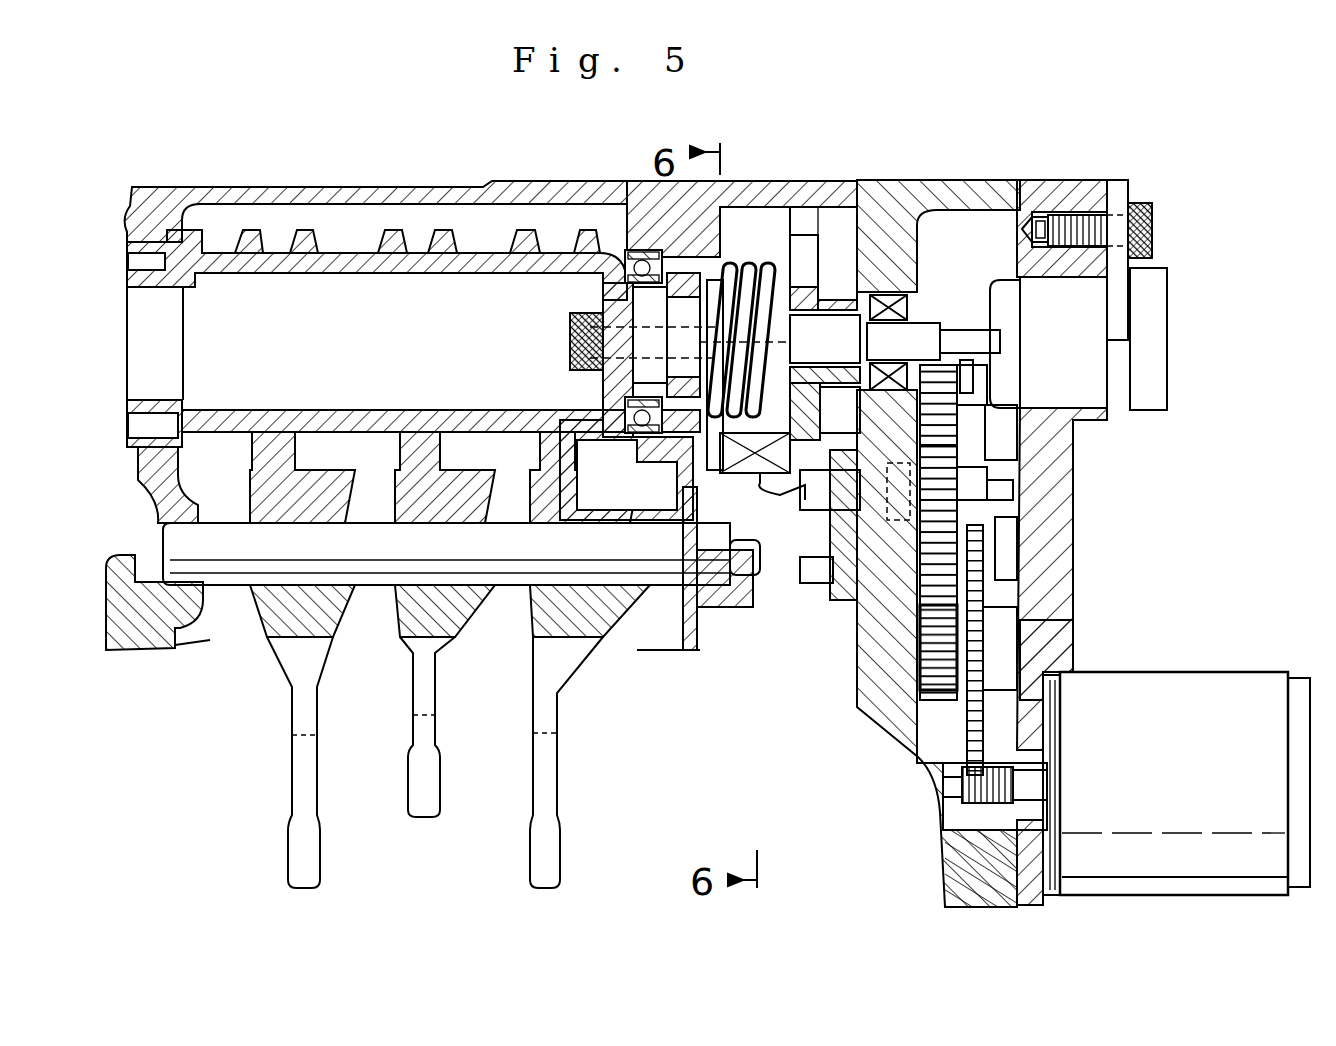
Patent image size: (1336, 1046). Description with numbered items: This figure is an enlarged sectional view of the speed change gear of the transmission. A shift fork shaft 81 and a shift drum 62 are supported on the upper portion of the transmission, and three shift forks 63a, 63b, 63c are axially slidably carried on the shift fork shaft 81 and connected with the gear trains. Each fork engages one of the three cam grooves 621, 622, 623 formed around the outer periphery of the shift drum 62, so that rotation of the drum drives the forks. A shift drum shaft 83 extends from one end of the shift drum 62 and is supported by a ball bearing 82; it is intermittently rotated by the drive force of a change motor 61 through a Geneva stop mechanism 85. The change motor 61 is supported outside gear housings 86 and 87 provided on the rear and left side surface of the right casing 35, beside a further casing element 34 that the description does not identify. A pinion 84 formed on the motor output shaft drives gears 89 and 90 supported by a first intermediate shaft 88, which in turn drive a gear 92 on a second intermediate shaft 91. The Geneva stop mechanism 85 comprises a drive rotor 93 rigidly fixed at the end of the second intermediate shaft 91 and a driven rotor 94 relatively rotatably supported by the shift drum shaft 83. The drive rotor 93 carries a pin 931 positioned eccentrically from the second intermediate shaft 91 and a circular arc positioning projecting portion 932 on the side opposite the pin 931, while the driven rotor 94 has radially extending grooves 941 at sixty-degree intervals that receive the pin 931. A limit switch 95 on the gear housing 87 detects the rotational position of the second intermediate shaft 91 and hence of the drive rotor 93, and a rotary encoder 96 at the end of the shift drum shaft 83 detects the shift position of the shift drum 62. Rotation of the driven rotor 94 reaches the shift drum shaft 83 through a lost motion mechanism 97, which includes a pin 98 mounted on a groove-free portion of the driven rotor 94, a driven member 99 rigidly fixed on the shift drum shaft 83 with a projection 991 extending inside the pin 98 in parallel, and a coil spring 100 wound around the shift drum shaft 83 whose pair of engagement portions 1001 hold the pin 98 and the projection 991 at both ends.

The cover 34 is at (260, 186).
The shift drum 62 is at (377, 238).
The cam groove 621 is at (290, 255).
The cam groove 622 is at (440, 260).
The cam groove 623 is at (548, 281).
The ball bearing 82 is at (612, 306).
The right casing 35 is at (778, 184).
The driven rotor 94 is at (838, 225).
The groove 941 is at (808, 228).
The gear housing 86 is at (953, 192).
The gear housing 87 is at (1049, 188).
The rotary encoder 96 is at (1078, 348).
The driven member 99 is at (725, 265).
The projection 991 is at (775, 362).
The coil spring 100 is at (748, 300).
The engagement portion 1001 is at (765, 430).
The Geneva stop mechanism 85 is at (880, 295).
The shift drum shaft 83 is at (910, 322).
The pin 98 is at (825, 491).
The drive rotor 93 is at (888, 532).
The pin 931 is at (845, 595).
The positioning projecting portion 932 is at (945, 430).
The gear 92 is at (940, 460).
The second intermediate shaft 91 is at (1025, 458).
The limit switch 95 is at (1010, 548).
The first intermediate shaft 88 is at (1045, 640).
The lost motion mechanism 97 is at (692, 456).
The gear 90 is at (880, 702).
The gear 89 is at (975, 690).
The pinion 84 is at (945, 817).
The change motor 61 is at (1188, 758).
The shift fork shaft 81 is at (222, 540).
The shift fork 63a is at (310, 840).
The shift fork 63b is at (425, 810).
The shift fork 63c is at (552, 860).